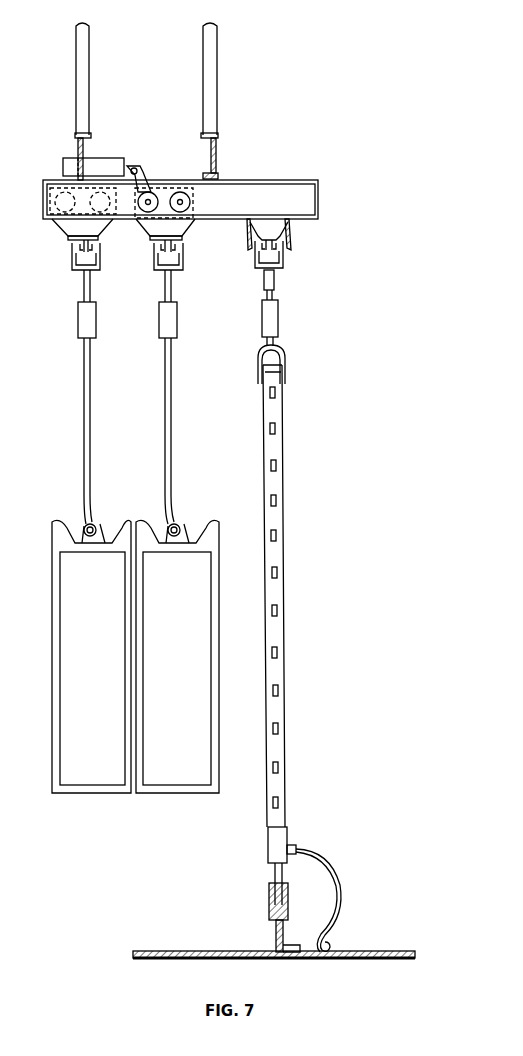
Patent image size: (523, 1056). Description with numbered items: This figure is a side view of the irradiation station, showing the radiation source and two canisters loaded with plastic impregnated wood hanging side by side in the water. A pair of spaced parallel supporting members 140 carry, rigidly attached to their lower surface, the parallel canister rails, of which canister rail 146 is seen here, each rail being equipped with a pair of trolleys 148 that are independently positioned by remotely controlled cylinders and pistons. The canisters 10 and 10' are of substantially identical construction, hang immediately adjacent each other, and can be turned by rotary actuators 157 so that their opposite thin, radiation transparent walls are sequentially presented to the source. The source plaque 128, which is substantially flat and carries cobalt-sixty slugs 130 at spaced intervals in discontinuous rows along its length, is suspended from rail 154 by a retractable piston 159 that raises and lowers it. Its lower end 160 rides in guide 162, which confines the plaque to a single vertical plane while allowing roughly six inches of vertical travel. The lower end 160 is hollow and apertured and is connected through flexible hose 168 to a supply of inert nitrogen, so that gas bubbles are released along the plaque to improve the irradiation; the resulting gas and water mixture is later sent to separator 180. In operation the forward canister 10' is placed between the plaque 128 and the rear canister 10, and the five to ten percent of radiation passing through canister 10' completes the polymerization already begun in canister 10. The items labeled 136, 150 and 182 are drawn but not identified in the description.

The upright posts 136 is at (89, 60).
The supporting members 140 is at (206, 138).
The housing 150 is at (63, 165).
The canister rail 146 is at (265, 193).
The trolleys 148 is at (170, 190).
The rail 154 is at (247, 240).
The hanger clips 182 is at (72, 262).
The rotary actuators 157 is at (159, 326).
The retractable piston 159 is at (278, 326).
The separator 180 is at (160, 410).
The source plaque 128 is at (283, 430).
The cobalt-60 slugs 130 is at (276, 466).
The lower end 160 is at (268, 846).
The guide 162 is at (269, 905).
The flexible hose 168 is at (340, 888).
The canister 10 is at (91, 656).
The canister 10' is at (177, 656).